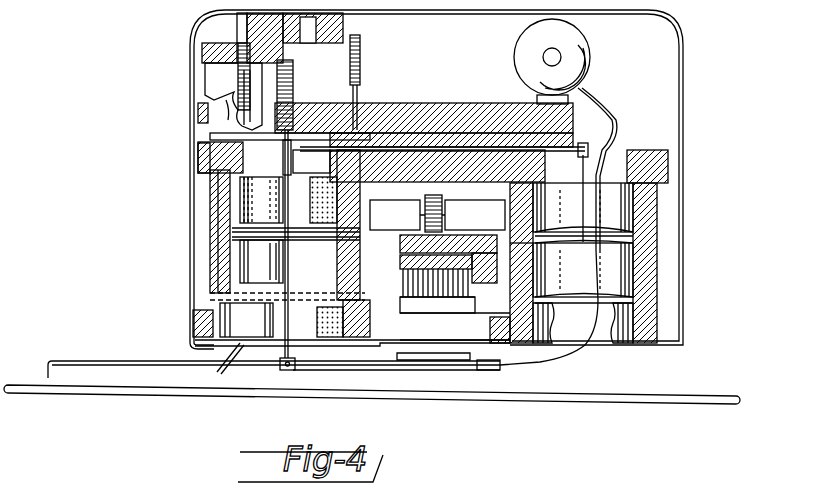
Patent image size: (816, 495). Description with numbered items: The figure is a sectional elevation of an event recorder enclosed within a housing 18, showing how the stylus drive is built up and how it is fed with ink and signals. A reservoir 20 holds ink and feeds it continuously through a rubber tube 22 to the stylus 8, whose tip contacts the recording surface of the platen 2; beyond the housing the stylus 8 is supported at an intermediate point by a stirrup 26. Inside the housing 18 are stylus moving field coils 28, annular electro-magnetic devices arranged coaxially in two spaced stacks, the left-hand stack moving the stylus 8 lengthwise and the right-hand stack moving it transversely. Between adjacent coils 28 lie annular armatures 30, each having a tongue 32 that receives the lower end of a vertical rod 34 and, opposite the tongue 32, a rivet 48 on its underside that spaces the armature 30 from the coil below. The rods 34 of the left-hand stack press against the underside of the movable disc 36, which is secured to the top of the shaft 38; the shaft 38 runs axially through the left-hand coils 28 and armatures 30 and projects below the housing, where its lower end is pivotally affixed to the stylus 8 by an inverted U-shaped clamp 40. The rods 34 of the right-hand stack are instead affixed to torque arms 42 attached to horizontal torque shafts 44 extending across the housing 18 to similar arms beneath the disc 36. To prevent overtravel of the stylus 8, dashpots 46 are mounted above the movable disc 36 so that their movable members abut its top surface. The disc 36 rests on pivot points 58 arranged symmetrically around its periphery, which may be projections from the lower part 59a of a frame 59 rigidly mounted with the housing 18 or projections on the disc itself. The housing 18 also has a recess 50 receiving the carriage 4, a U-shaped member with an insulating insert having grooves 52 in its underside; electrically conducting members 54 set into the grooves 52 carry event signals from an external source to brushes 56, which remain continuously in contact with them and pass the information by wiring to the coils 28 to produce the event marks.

The platen 2 is at (365, 394).
The carriage 4 is at (455, 245).
The stylus 8 is at (75, 362).
The housing 18 is at (683, 104).
The reservoir 20 is at (580, 58).
The rubber tube 22 is at (604, 110).
The stirrup 26 is at (221, 369).
The stylus moving field coils 28 is at (250, 195).
The armatures 30 is at (240, 235).
The tongue 32 is at (240, 297).
The rods 34 is at (230, 217).
The movable disc 36 is at (366, 146).
The shaft 38 is at (281, 175).
The inverted U-shaped clamp 40 is at (293, 370).
The torque arms 42 is at (580, 143).
The horizontal torque shafts 44 is at (433, 150).
The dashpots 46 is at (232, 86).
The rivet 48 is at (258, 238).
The recess 50 is at (476, 197).
The grooves 52 is at (475, 242).
The electrically conducting members 54 is at (400, 273).
The brushes 56 is at (460, 300).
The pivot points 58 is at (324, 150).
The frame 59 is at (200, 112).
The lower part of frame 59a is at (205, 155).